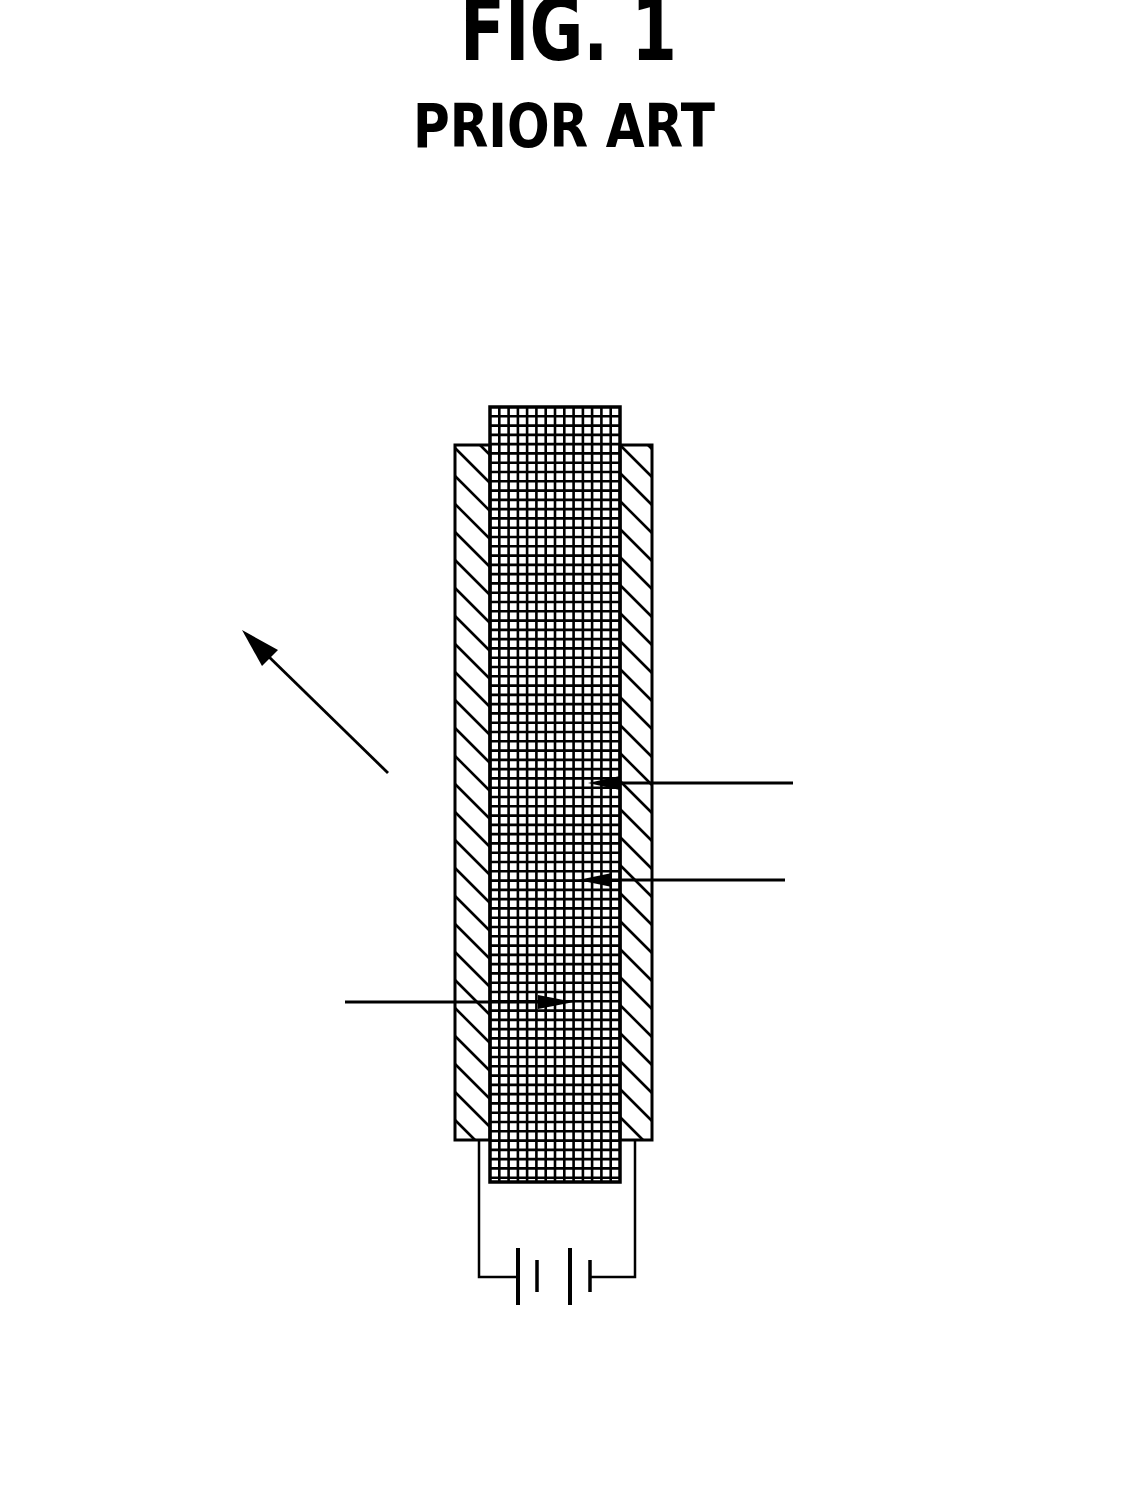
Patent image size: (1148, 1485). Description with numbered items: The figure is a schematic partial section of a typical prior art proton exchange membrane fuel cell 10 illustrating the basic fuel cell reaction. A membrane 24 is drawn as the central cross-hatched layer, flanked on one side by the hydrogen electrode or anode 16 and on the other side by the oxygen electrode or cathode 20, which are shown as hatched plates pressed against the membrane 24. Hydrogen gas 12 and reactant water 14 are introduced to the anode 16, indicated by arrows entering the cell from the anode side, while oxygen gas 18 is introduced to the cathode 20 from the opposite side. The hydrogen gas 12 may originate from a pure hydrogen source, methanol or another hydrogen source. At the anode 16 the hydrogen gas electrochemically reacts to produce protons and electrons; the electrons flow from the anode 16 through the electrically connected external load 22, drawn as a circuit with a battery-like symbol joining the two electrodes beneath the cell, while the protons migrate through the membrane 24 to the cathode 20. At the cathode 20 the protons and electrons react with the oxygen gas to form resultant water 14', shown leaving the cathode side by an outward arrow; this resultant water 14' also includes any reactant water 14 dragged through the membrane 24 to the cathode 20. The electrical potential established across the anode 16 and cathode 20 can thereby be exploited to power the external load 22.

The proton exchange membrane fuel cell 10 is at (652, 312).
The hydrogen gas 12 is at (743, 783).
The reactant water 14 is at (732, 940).
The resultant water 14' is at (300, 678).
The hydrogen electrode (anode) 16 is at (640, 448).
The oxygen gas 18 is at (375, 1000).
The oxygen electrode (cathode) 20 is at (467, 445).
The external load 22 is at (635, 1217).
The membrane 24 is at (527, 407).